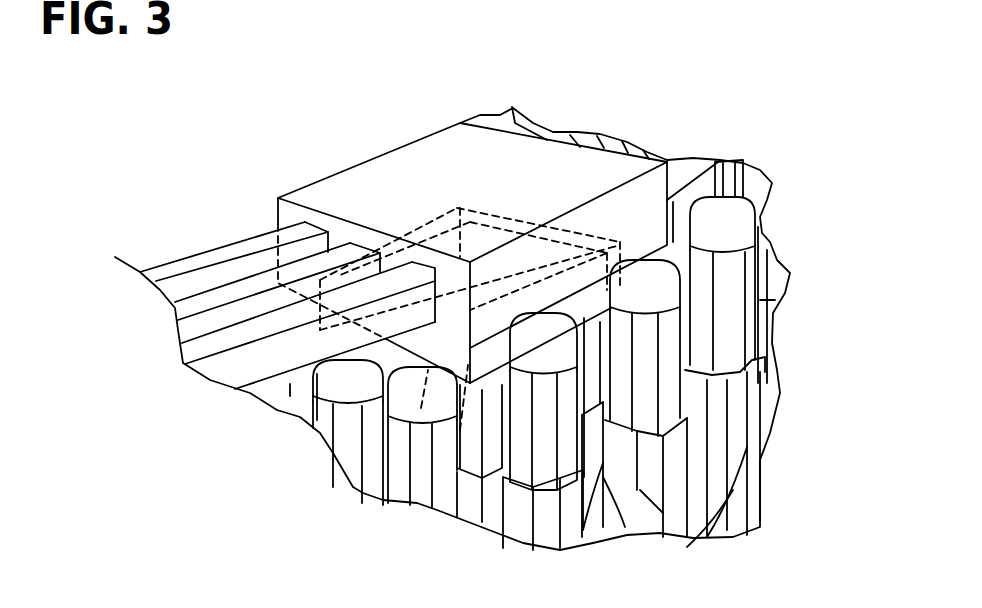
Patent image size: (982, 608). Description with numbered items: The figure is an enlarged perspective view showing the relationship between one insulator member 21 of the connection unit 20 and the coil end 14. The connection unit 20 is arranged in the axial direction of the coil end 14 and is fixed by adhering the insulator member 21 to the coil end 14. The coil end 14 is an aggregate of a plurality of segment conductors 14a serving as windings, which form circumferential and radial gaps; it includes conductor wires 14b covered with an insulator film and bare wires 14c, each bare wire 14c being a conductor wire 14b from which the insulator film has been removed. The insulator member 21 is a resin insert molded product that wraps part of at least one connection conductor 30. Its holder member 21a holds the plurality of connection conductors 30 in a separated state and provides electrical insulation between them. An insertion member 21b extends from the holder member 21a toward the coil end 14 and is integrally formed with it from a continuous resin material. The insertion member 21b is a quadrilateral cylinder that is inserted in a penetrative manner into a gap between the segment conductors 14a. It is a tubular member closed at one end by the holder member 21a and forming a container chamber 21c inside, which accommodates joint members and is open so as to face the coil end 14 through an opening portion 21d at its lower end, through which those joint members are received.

The coil end 14 is at (780, 463).
The segment conductor 14a is at (642, 488).
The conductor wire 14b is at (668, 480).
The bare wire 14c is at (677, 387).
The connection unit 20 is at (588, 116).
The insulator member 21 is at (377, 158).
The holder member 21a is at (323, 180).
The insertion member 21b is at (497, 357).
The container chamber 21c is at (468, 365).
The opening portion 21d is at (428, 370).
The connection conductor 30 is at (223, 247).